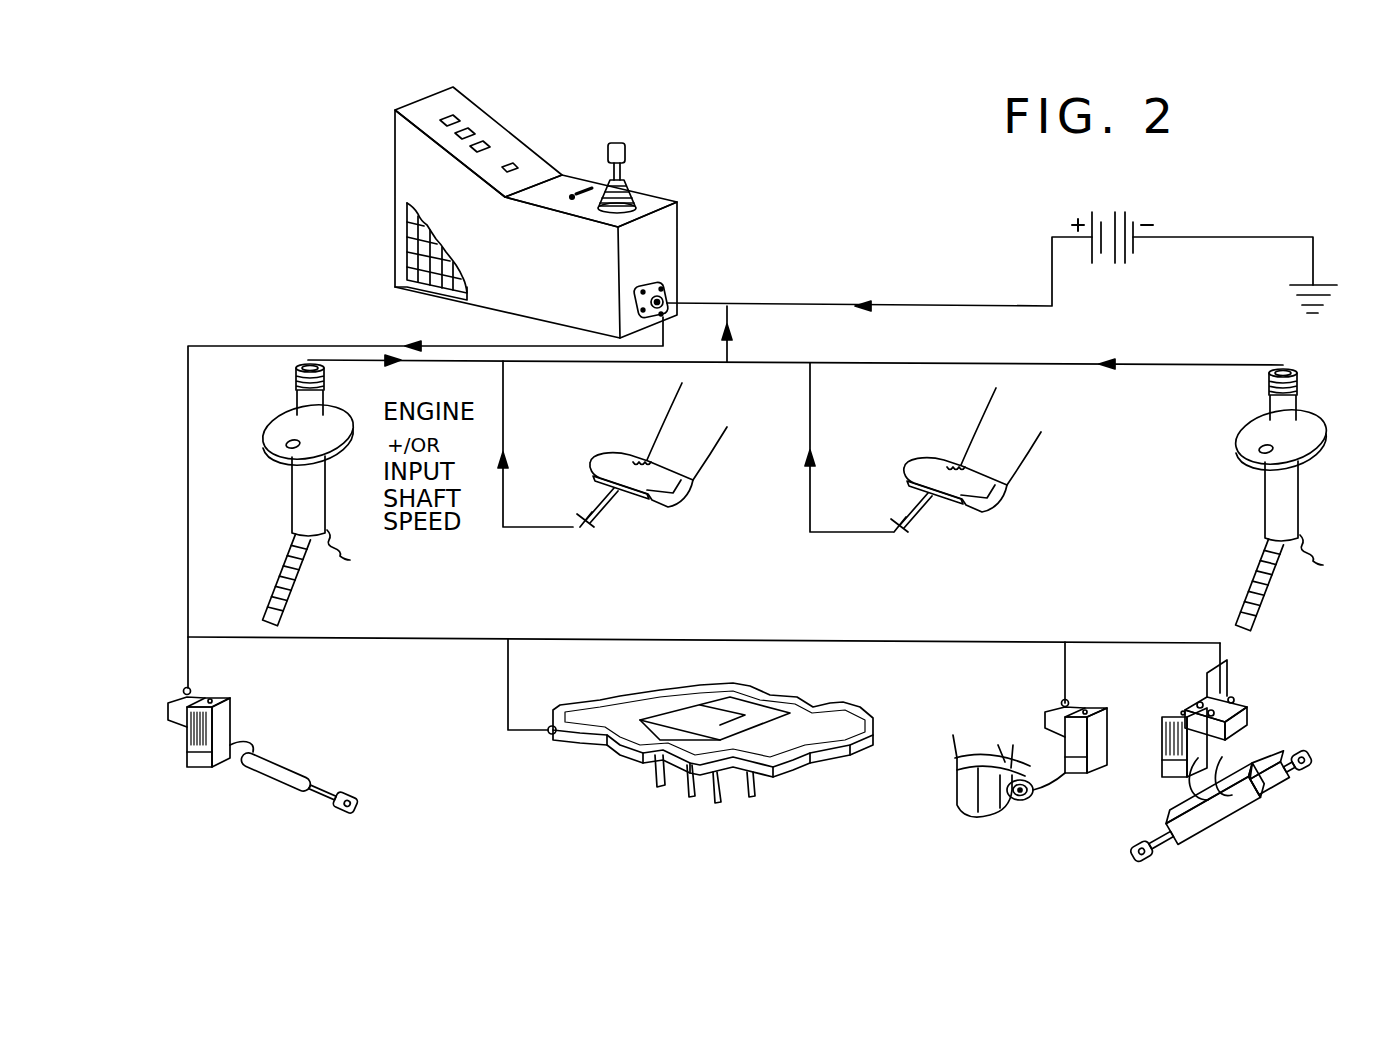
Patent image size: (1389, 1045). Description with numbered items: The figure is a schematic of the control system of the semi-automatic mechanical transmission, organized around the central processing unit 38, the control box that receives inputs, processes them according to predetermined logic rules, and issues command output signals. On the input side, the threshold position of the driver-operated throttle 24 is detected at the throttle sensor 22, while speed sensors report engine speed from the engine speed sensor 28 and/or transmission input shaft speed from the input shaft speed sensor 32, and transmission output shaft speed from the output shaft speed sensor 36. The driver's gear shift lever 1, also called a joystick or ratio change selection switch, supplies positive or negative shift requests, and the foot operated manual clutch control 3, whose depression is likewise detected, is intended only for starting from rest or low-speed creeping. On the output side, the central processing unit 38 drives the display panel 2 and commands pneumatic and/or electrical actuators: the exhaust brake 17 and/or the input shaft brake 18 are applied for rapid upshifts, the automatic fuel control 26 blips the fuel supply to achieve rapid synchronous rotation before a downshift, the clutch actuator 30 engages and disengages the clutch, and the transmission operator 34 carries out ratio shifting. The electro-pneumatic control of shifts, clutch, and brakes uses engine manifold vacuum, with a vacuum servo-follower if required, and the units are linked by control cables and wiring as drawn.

The gear shift lever 1 is at (627, 151).
The display panel 2 is at (526, 124).
The foot operated manual clutch control 3 is at (621, 512).
The exhaust brake 17 is at (1158, 657).
The input shaft brake 18 is at (1089, 696).
The throttle sensor 22 is at (1003, 543).
The driver-operated throttle 24 is at (930, 524).
The automatic fuel control 26 is at (1259, 723).
The engine speed sensor 28 is at (279, 495).
The clutch actuator 30 is at (322, 747).
The transmission input shaft speed sensor 32 is at (279, 495).
The transmission operator 34 is at (831, 690).
The transmission output shaft speed sensor 36 is at (1238, 533).
The central processing unit 38 is at (523, 272).